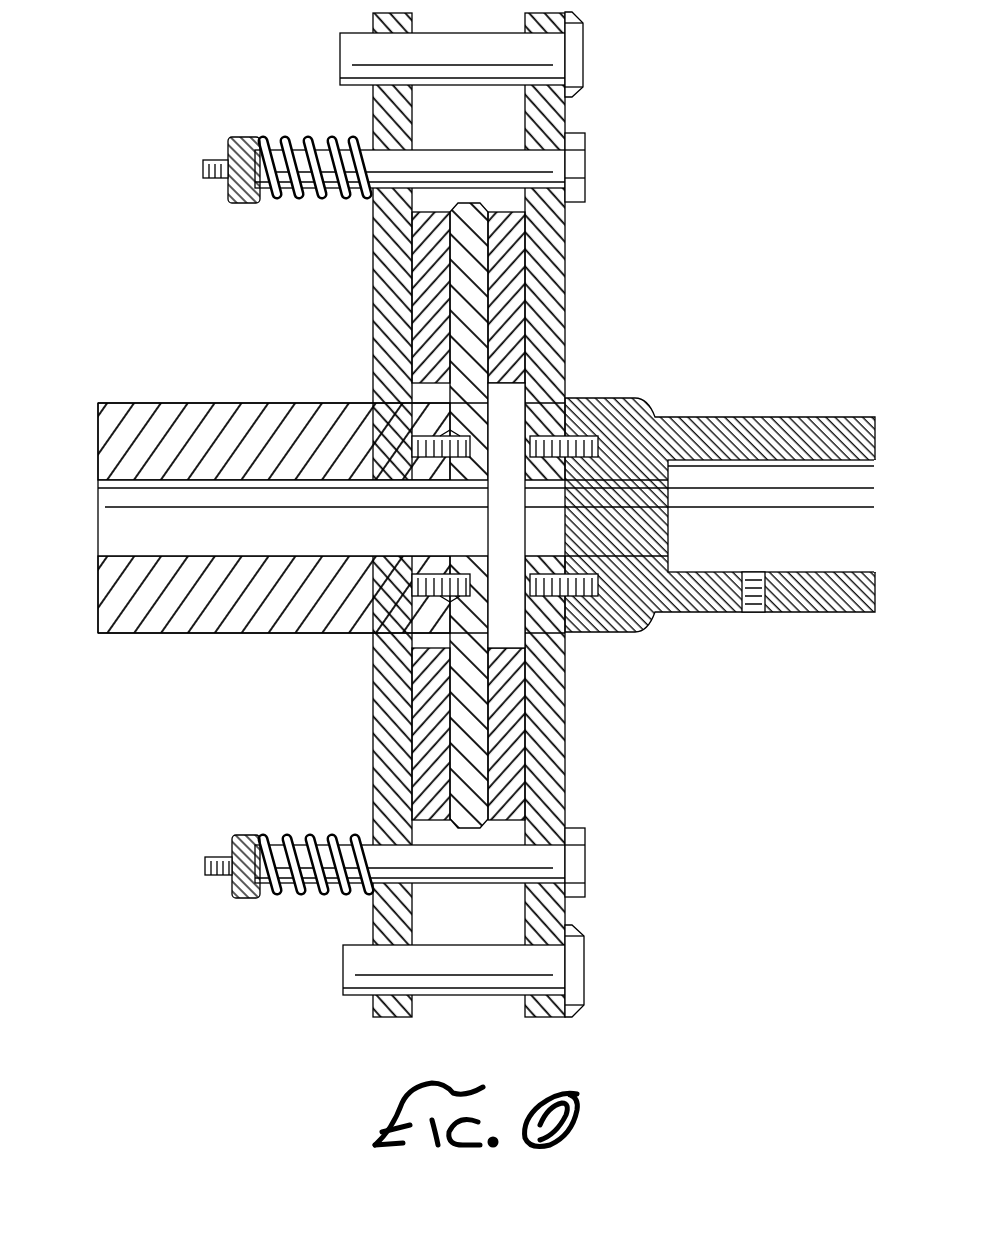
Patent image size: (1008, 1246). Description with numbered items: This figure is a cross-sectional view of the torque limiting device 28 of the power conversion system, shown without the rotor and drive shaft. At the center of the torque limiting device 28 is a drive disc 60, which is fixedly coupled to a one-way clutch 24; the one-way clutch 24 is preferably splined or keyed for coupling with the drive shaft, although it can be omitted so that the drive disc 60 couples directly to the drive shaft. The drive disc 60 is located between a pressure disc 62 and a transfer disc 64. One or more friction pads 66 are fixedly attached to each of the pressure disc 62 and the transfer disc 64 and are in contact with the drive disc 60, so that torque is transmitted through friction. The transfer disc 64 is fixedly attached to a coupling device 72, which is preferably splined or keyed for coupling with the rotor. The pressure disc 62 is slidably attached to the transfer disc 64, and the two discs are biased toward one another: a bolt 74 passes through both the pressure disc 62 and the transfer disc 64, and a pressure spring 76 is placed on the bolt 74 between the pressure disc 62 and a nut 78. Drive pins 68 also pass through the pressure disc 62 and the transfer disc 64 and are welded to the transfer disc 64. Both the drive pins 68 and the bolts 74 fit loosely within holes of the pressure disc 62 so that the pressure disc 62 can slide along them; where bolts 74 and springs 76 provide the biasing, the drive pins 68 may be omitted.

The one-way clutch 24 is at (128, 430).
The torque limiting device 28 is at (461, 514).
The drive disc 60 is at (490, 255).
The pressure disc 62 is at (378, 298).
The transfer disc 64 is at (563, 298).
The friction pads 66 is at (428, 343).
The drive pins 68 is at (585, 48).
The coupling device 72 is at (773, 417).
The bolt 74 is at (587, 160).
The pressure spring 76 is at (303, 137).
The nut 78 is at (235, 140).